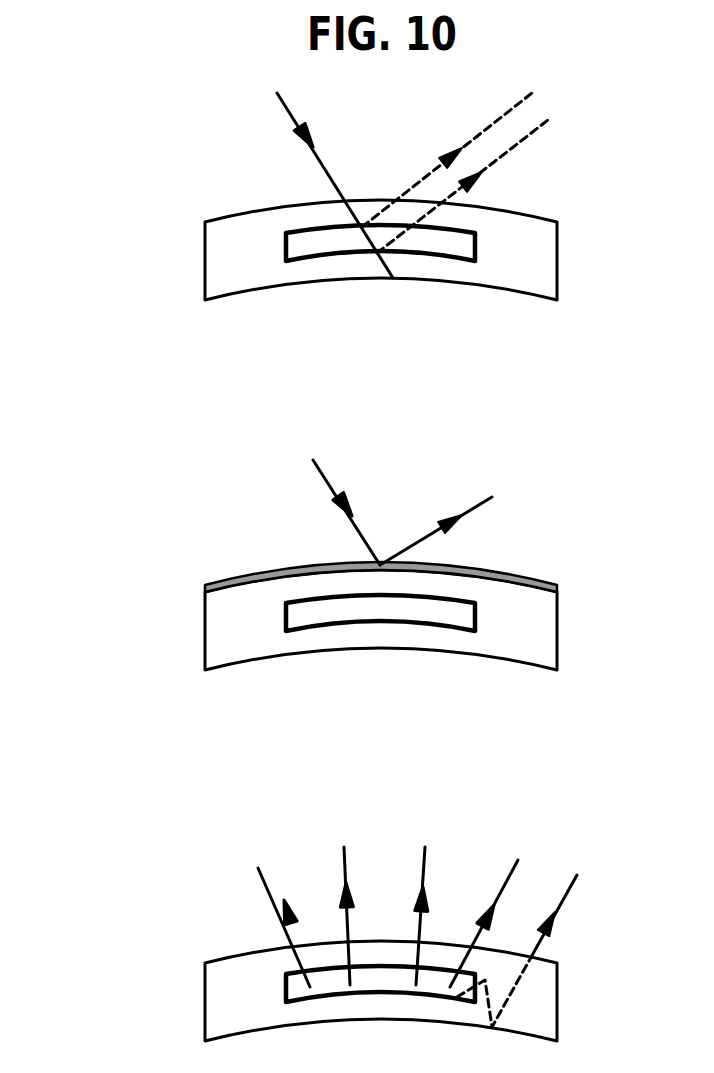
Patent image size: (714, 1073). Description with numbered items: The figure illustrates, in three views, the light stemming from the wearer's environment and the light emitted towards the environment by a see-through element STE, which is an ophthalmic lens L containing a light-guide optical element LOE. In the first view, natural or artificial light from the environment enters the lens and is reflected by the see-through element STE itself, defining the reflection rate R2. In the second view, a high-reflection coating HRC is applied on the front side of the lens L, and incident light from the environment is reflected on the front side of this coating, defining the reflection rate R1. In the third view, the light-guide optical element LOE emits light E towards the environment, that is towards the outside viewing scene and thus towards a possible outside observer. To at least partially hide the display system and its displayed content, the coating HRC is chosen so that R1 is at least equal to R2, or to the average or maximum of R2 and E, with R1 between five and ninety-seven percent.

The see-through element STE is at (307, 620).
The ophthalmic lens L is at (205, 268).
The light-guide optical element LOE is at (283, 247).
The high-reflection coating HRC is at (525, 575).
The reflection rate of incident light on the front side of the high-reflection coati R1 is at (458, 518).
The reflection rate of incident light by the see-through element R2 is at (522, 67).
The light intensity directly emitted by the see-through element towards the environm E is at (523, 935).